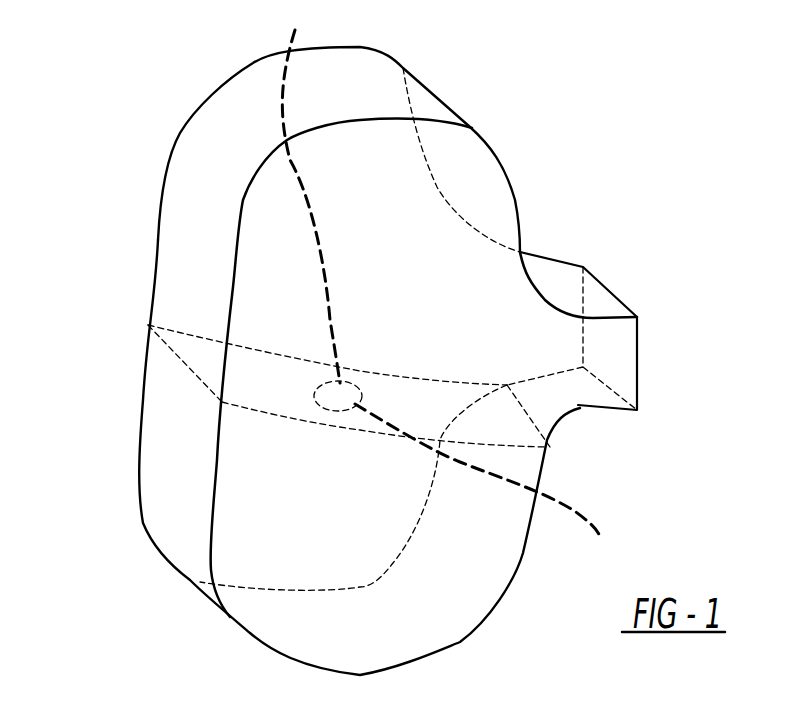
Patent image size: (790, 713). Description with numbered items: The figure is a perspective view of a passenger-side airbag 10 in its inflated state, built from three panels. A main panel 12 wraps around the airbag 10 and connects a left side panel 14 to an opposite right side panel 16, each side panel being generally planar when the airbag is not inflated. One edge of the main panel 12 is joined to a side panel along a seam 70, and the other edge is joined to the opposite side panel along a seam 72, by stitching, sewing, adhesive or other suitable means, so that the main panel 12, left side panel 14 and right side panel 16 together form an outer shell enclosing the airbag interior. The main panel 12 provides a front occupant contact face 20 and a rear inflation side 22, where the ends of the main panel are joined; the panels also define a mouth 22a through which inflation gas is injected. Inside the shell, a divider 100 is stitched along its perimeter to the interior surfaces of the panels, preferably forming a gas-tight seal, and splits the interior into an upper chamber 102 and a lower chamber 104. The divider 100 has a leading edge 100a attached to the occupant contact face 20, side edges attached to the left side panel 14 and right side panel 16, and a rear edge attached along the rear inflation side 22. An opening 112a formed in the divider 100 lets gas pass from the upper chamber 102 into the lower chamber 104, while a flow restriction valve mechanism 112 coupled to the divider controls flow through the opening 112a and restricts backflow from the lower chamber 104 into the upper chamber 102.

The passenger-side airbag 10 is at (672, 92).
The main panel 12 is at (175, 297).
The left side panel 14 is at (178, 200).
The right side panel 16 is at (522, 432).
The occupant contact face 20 is at (190, 350).
The rear inflation side 22 is at (615, 293).
The mouth 22a is at (620, 357).
The seam 70 is at (423, 152).
The seam 72 is at (518, 208).
The divider 100 is at (198, 387).
The leading edge 100a is at (187, 370).
The upper chamber 102 is at (578, 407).
The lower chamber 104 is at (340, 630).
The flow restriction valve mechanism 112 is at (495, 484).
The opening 112a is at (322, 208).